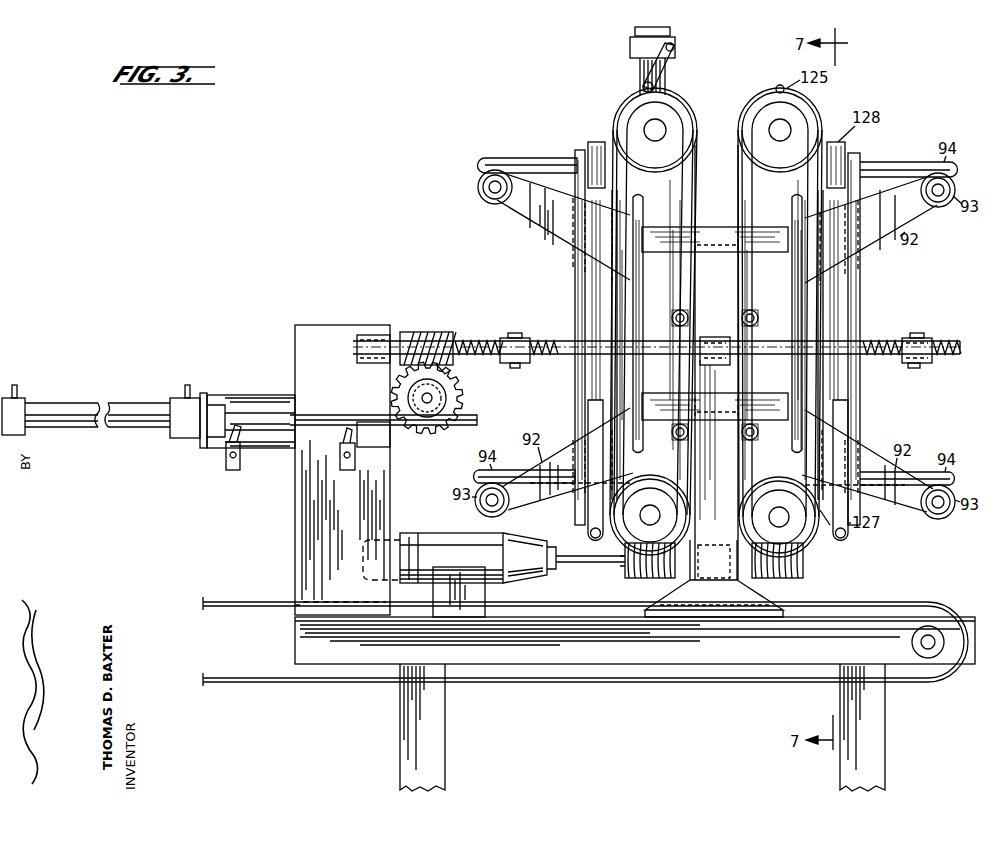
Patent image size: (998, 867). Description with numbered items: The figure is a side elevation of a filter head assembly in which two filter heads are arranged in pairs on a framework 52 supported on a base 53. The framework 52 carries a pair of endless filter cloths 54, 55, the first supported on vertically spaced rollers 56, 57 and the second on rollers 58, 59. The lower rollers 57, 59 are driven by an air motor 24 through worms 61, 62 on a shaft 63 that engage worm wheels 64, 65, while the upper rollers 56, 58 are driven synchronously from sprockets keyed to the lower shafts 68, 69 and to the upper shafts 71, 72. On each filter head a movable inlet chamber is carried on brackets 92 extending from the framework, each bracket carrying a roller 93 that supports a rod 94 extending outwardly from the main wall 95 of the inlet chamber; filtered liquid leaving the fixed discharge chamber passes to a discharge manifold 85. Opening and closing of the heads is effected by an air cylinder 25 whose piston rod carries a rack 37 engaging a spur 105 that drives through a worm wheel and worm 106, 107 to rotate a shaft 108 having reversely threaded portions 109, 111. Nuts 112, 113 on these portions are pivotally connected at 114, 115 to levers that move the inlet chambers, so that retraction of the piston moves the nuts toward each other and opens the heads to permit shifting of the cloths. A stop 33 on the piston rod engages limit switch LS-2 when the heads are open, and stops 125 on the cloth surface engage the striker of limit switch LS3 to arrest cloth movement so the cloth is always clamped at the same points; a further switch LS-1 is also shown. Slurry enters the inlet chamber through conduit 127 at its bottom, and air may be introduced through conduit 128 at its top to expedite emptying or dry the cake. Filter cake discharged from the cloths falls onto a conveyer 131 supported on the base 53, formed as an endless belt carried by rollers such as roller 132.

The air motor 24 is at (441, 533).
The air cylinder 25 is at (133, 403).
The stop 33 is at (342, 418).
The piston rod (rack) 37 is at (476, 417).
The framework 52 is at (716, 252).
The base 53 is at (710, 655).
The endless filter cloth 54 is at (697, 167).
The endless filter cloth 55 is at (740, 172).
The upper roller 56 is at (628, 108).
The lower roller 57 is at (625, 555).
The upper roller 58 is at (810, 118).
The lower roller 59 is at (812, 540).
The worm 61 is at (644, 580).
The worm 62 is at (792, 577).
The shaft 63 is at (567, 558).
The worm wheel 64 is at (672, 506).
The worm wheel 65 is at (758, 512).
The lower shaft 68 is at (660, 515).
The lower shaft 69 is at (770, 518).
The upper shaft 71 is at (662, 125).
The upper shaft 72 is at (772, 125).
The discharge manifold 85 is at (686, 313).
The bracket 92 is at (537, 224).
The roller 93 is at (480, 194).
The rod 94 is at (497, 158).
The main wall 95 is at (575, 268).
The spur 105 is at (452, 396).
The worm wheel 106 is at (449, 376).
The worm 107 is at (432, 332).
The shaft 108 is at (860, 342).
The reversely threaded portion 109 is at (540, 340).
The reversely threaded portion 111 is at (946, 341).
The nut 112 is at (517, 368).
The nut 113 is at (926, 362).
The pivot connection 114 is at (512, 337).
The pivot connection 115 is at (914, 369).
The stop 125 is at (665, 85).
The conduit 127 is at (588, 507).
The conduit 128 is at (596, 142).
The conveyer 131 is at (872, 604).
The roller 132 is at (938, 612).
The limit switch LS3 is at (674, 40).
The limit switch LS-1 is at (356, 462).
The limit switch LS-2 is at (228, 475).